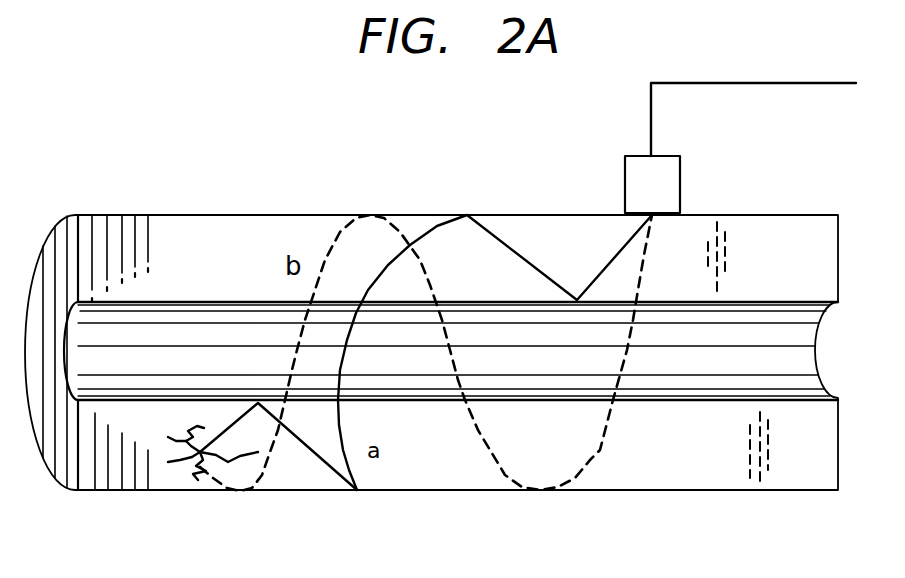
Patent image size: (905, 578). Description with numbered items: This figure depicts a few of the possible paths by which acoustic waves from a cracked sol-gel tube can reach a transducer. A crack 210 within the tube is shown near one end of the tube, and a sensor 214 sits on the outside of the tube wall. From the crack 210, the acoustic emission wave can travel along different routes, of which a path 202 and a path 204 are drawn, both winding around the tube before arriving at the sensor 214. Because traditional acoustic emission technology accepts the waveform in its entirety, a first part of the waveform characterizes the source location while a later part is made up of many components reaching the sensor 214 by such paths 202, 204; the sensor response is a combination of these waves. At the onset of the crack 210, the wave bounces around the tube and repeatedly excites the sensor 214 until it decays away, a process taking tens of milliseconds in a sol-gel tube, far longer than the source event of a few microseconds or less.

The path 202 is at (499, 241).
The path 204 is at (336, 241).
The crack 210 is at (190, 458).
The sensor 214 is at (681, 184).